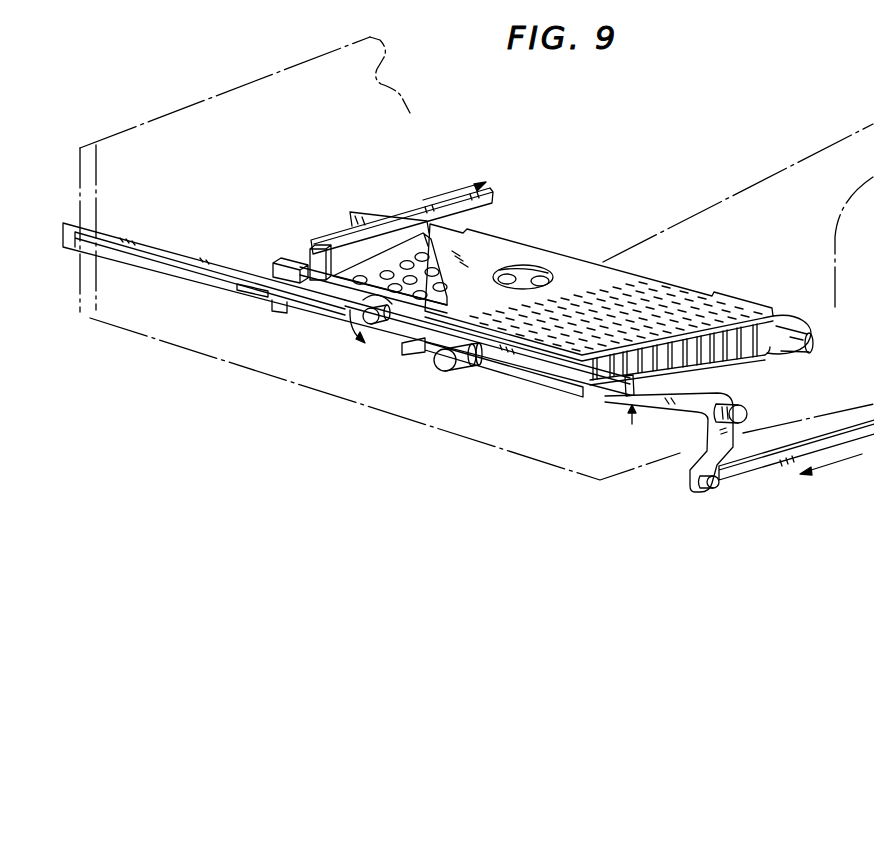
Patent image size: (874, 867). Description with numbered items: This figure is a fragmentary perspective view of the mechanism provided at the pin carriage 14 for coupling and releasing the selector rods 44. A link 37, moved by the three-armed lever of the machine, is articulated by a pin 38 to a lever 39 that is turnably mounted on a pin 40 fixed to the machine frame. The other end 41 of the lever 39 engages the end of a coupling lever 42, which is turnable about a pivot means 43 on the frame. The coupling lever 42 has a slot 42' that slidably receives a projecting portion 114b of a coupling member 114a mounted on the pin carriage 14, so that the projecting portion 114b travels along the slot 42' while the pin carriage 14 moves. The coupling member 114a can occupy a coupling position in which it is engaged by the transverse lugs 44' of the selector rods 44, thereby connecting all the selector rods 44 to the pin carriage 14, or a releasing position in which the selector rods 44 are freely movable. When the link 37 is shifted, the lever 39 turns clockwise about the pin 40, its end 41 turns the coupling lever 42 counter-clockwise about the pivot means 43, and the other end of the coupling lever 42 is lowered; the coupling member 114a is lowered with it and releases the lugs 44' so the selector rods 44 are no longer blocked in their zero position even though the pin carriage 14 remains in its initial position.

The pin carriage 14 is at (497, 258).
The link 37 is at (772, 467).
The pin 38 is at (714, 489).
The lever 39 is at (688, 402).
The pin 40 is at (745, 412).
The end of lever 41 is at (605, 398).
The coupling lever 42 is at (489, 358).
The slot 42' is at (204, 272).
The pivot means 43 is at (372, 325).
The selector rods 44 is at (398, 216).
The transverse lugs 44' is at (294, 253).
The coupling member 114a is at (337, 283).
The projecting portion 114b is at (270, 276).